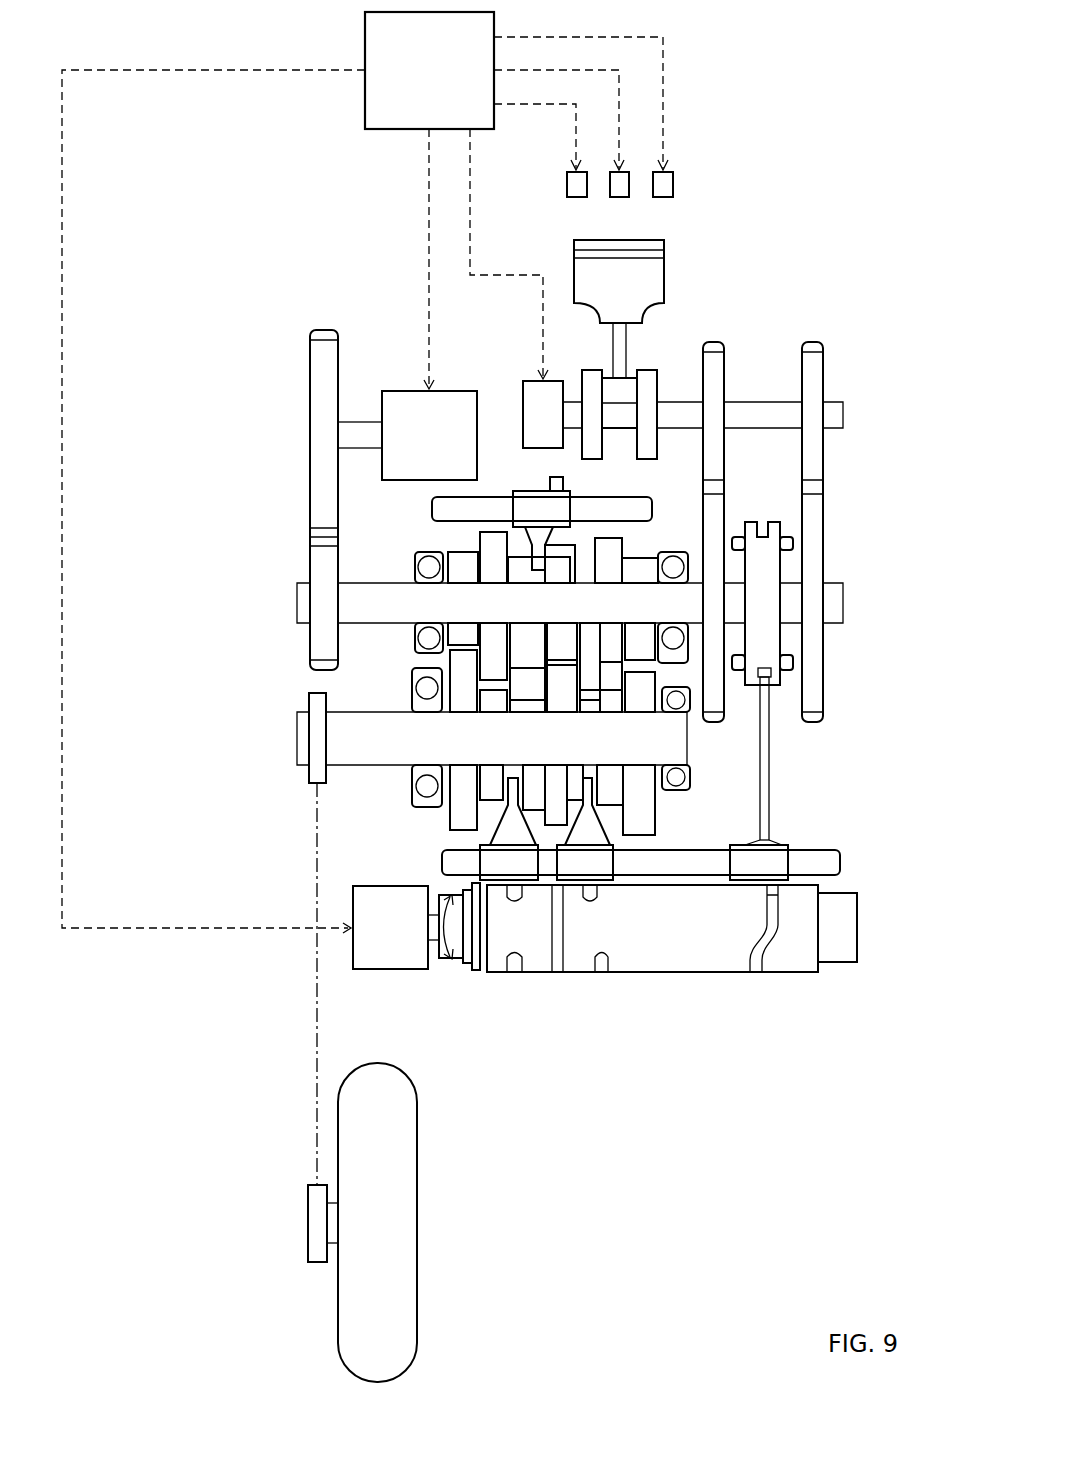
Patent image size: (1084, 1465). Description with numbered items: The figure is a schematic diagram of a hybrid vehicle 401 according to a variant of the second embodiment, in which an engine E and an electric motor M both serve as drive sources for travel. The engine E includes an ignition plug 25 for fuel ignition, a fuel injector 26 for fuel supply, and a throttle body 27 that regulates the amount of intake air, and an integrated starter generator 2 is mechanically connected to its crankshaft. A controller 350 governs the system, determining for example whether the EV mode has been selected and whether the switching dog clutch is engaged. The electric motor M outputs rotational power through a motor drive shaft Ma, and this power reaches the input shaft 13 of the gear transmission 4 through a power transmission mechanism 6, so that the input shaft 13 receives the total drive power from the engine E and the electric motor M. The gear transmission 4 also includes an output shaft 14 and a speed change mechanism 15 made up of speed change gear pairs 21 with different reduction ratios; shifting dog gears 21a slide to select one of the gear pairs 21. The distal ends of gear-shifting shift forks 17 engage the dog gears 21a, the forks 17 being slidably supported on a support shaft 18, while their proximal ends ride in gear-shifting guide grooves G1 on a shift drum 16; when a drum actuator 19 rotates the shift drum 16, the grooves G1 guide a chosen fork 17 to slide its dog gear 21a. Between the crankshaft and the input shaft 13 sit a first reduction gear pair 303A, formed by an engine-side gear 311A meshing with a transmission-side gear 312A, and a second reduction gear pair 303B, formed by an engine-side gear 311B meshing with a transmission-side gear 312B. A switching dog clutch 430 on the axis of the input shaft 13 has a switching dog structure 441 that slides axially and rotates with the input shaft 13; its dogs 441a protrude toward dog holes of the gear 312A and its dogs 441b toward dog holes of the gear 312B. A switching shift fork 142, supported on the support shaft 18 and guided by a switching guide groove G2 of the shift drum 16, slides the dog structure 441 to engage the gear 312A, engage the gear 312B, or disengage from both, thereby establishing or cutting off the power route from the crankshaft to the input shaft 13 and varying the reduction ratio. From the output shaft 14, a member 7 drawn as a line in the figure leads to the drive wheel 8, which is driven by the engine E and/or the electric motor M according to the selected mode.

The controller 350 is at (365, 40).
The hybrid vehicle 401 is at (848, 88).
The engine E is at (733, 178).
The ignition plug 25 is at (566, 190).
The fuel injector 26 is at (620, 198).
The throttle body 27 is at (675, 185).
The integrated starter generator 2 is at (522, 400).
The first reduction gear pair 303A is at (693, 362).
The second reduction gear pair 303B is at (826, 362).
The engine-side gear 311A is at (727, 368).
The engine-side gear 311B is at (825, 447).
The switching dog structure 441 is at (841, 564).
The dogs 441a is at (736, 535).
The dogs 441b is at (790, 540).
The switching dog clutch 430 is at (832, 648).
The transmission-side gear 312A is at (724, 700).
The transmission-side gear 312B is at (825, 690).
The switching shift fork 142 is at (771, 797).
The power transmission mechanism 6 is at (310, 478).
The electric motor M is at (408, 391).
The motor drive shaft Ma is at (360, 420).
The input shaft 13 is at (297, 603).
The output shaft 14 is at (297, 738).
The speed change mechanism 15 is at (407, 690).
The gear transmission 4 is at (403, 558).
The speed change gear pairs 21 is at (648, 828).
The shifting dog gears 21a is at (573, 550).
The gear-shifting shift forks 17 is at (537, 497).
The support shaft 18 is at (650, 512).
The drum actuator 19 is at (395, 975).
The shift drum 16 is at (684, 963).
The gear-shifting guide grooves G1 is at (600, 968).
The switching guide groove G2 is at (755, 975).
The chain 7 is at (317, 997).
The drive wheel 8 is at (405, 1220).